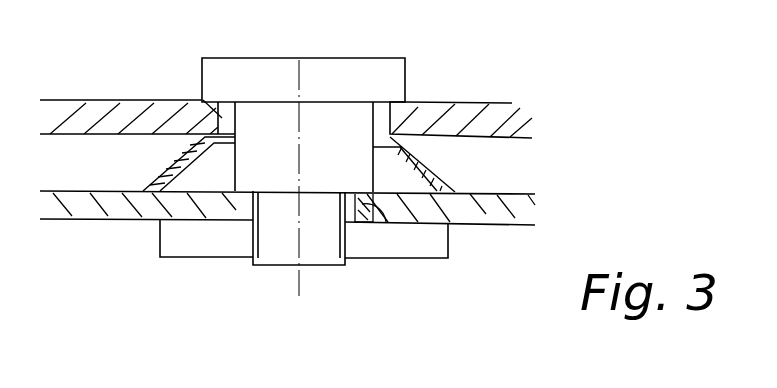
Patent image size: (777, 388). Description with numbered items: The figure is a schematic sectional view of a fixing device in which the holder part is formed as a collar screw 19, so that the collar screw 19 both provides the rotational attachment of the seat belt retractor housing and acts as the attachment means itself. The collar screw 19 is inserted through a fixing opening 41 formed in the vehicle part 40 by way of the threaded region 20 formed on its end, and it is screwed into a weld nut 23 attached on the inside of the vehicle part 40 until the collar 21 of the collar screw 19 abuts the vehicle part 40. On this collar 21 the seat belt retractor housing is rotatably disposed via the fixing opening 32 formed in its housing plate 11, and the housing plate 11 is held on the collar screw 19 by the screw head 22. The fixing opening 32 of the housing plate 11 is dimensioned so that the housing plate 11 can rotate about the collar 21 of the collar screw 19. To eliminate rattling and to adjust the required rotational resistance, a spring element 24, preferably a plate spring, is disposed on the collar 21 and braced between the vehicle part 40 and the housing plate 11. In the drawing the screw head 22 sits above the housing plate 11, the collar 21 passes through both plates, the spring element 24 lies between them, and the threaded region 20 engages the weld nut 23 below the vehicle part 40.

The housing plate 11 is at (498, 128).
The vehicle part 40 is at (520, 213).
The collar screw 19 is at (346, 149).
The screw head 22 is at (229, 80).
The collar 21 is at (332, 142).
The fixing opening 32 is at (203, 100).
The spring element 24 is at (433, 168).
The threaded region 20 is at (318, 250).
The weld nut 23 is at (200, 237).
The fixing opening 41 is at (386, 222).